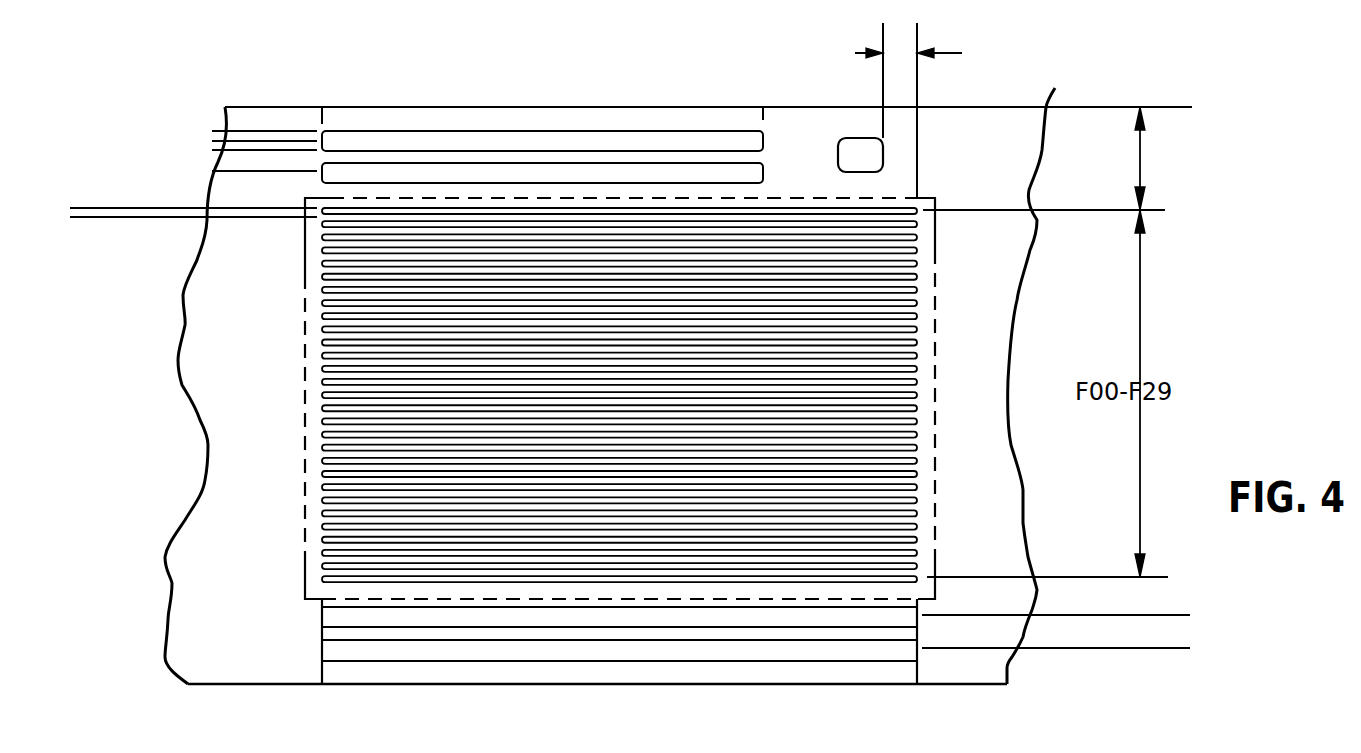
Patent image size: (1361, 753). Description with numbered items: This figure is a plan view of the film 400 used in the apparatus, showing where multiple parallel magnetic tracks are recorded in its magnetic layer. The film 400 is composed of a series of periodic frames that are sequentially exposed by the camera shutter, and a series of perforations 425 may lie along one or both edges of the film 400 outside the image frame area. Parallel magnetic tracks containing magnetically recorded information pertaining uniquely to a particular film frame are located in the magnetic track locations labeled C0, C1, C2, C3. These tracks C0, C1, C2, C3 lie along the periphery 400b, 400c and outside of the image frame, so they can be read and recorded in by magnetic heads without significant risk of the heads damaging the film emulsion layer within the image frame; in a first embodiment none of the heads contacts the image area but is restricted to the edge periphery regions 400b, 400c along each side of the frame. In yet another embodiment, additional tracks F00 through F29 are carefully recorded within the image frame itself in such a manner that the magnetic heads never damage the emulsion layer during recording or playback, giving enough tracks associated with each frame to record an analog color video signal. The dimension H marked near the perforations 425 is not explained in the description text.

The film 400 is at (1055, 88).
The edge periphery region 400b is at (786, 126).
The edge periphery region 400c is at (549, 676).
The perforations 425 is at (850, 138).
The gap width H is at (919, 110).
The additional track F00 is at (921, 198).
The additional track F29 is at (918, 578).
The magnetic track location C0 is at (619, 618).
The magnetic track location C1 is at (619, 654).
The magnetic track location C2 is at (542, 175).
The magnetic track location C3 is at (542, 143).